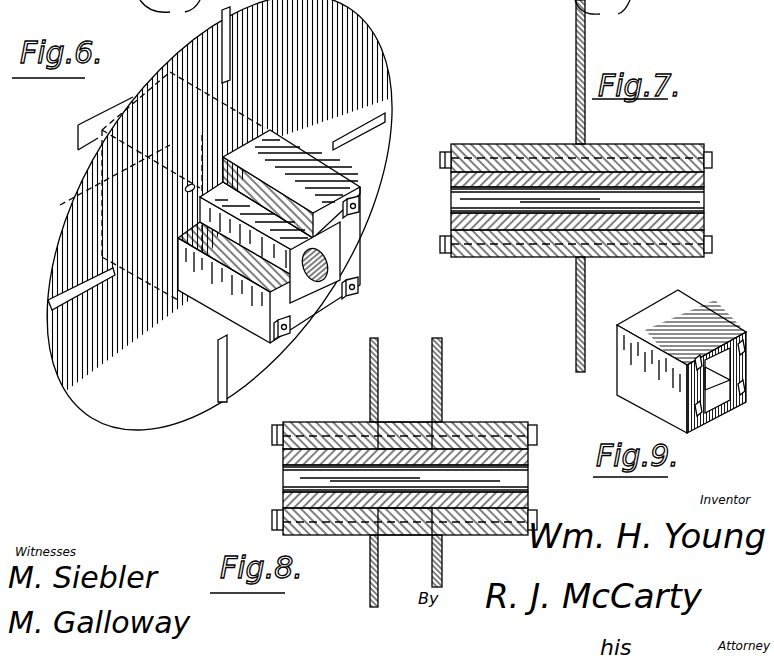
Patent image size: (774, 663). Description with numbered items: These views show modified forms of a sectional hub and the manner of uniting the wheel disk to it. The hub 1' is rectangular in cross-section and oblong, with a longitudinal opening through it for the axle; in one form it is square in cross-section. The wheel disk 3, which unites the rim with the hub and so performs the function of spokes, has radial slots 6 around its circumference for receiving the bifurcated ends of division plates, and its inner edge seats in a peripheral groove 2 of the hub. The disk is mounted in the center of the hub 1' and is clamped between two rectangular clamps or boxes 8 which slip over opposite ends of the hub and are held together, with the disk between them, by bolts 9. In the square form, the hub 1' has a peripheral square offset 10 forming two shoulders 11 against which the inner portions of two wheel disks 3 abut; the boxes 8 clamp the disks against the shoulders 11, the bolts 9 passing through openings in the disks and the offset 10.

In FIG. 6, the hub 1' is at (360, 265).
In FIG. 7, the hub 1' is at (561, 201).
In FIG. 8, the hub 1' is at (383, 478).
In FIG. 6, the annular groove 2 is at (392, 15).
In FIG. 6, the wheel disk 3 is at (231, 245).
In FIG. 7, the wheel disk 3 is at (575, 80).
In FIG. 8, the wheel disk 3 is at (432, 350).
In FIG. 6, the radial slots 6 is at (232, 55).
In FIG. 6, the rectangular clamps or boxes 8 is at (269, 236).
In FIG. 7, the rectangular clamps or boxes 8 is at (533, 133).
In FIG. 8, the rectangular clamps or boxes 8 is at (341, 412).
In FIG. 9, the rectangular clamps or boxes 8 is at (681, 361).
In FIG. 6, the bolts 9 is at (360, 199).
In FIG. 7, the bolts 9 is at (638, 125).
In FIG. 8, the bolts 9 is at (275, 425).
In FIG. 8, the peripheral square offset 10 is at (403, 422).
In FIG. 8, the shoulders 11 is at (427, 536).